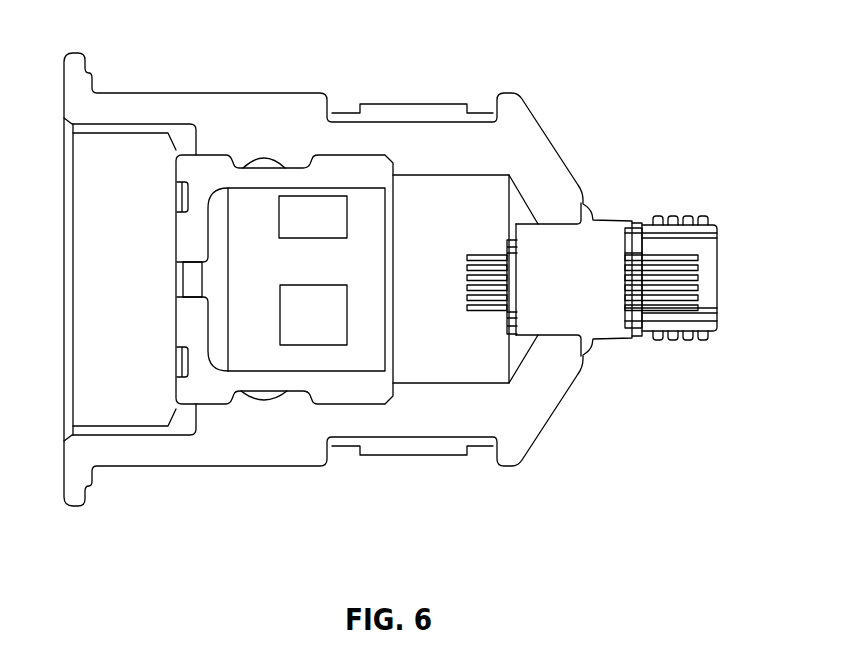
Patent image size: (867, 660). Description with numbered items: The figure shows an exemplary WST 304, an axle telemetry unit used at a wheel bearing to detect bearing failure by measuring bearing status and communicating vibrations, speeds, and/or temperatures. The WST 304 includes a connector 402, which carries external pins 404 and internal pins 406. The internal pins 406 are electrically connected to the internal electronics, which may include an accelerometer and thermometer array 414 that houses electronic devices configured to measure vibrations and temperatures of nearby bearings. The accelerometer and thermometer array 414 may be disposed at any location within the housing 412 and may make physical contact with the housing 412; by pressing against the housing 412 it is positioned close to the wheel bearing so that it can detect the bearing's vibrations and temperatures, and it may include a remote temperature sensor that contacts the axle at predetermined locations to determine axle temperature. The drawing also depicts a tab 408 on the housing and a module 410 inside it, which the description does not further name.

The WST 304 is at (402, 277).
The connector 402 is at (598, 312).
The external pins 404 is at (692, 281).
The internal pins 406 is at (485, 292).
The latch tab 408 is at (413, 107).
The module body 410 is at (307, 260).
The housing 412 is at (283, 117).
The accelerometer and thermometer array 414 is at (97, 294).